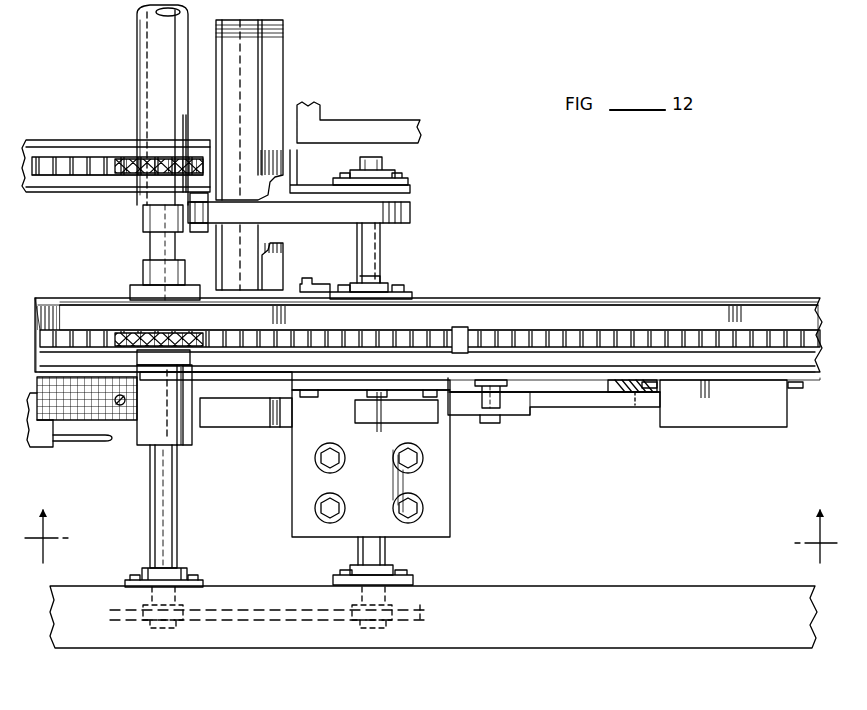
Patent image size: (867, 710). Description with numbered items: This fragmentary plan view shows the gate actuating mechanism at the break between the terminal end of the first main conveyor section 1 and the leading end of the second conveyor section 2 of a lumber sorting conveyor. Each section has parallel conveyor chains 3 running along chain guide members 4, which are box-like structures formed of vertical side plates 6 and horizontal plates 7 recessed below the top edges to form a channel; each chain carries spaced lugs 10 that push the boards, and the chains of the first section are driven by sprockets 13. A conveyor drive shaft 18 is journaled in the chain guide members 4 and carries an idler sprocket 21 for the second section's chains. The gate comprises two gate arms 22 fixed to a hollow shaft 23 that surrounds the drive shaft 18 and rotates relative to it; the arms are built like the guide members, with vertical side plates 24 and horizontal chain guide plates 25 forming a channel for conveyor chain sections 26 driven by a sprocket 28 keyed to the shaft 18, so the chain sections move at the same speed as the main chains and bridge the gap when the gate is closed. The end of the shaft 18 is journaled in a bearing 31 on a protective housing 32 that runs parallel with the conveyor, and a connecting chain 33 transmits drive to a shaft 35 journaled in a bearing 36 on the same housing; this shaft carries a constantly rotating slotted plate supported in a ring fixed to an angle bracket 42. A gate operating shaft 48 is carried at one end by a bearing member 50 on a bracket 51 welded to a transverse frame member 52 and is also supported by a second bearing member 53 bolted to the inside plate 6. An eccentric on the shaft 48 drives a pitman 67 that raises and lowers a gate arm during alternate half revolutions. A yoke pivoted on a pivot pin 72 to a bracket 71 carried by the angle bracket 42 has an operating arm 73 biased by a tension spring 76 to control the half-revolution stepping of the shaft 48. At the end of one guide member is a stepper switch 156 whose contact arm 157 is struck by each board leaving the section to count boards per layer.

The first main conveyor section 1 is at (60, 296).
The second conveyor section 2 is at (576, 291).
The conveyor chains 3 is at (85, 345).
The chain guide members 4 is at (660, 298).
The vertical side plates 6 is at (483, 299).
The horizontal plates 7 is at (690, 310).
The lugs 10 is at (462, 326).
The sprockets 13 is at (431, 536).
The conveyor drive shaft 18 is at (165, 500).
The idler sprocket 21 is at (192, 338).
The gate arms 22 is at (56, 137).
The hollow shaft 23 is at (150, 60).
The vertical side plates 24 is at (86, 140).
The horizontal chain guide plates 25 is at (68, 185).
The conveyor chain sections 26 is at (104, 158).
The sprocket 28 is at (184, 119).
The bearing 31 is at (182, 570).
The protective housing 32 is at (500, 640).
The connecting chain 33 is at (266, 620).
The drive shaft 35 is at (377, 556).
The bearing 36 is at (350, 569).
The angle bracket 42 is at (440, 492).
The gate operating shaft 48 is at (375, 259).
The bearing member 50 is at (393, 178).
The bracket 51 is at (314, 190).
The transverse frame member 52 is at (278, 58).
The second bearing member 53 is at (392, 287).
The pitman 67 is at (325, 214).
The bracket 71 is at (518, 413).
The pivot pin 72 is at (490, 422).
The operating arm 73 is at (568, 398).
The tension spring 76 is at (633, 381).
The stepper switch 156 is at (42, 445).
The contact arm 157 is at (95, 442).